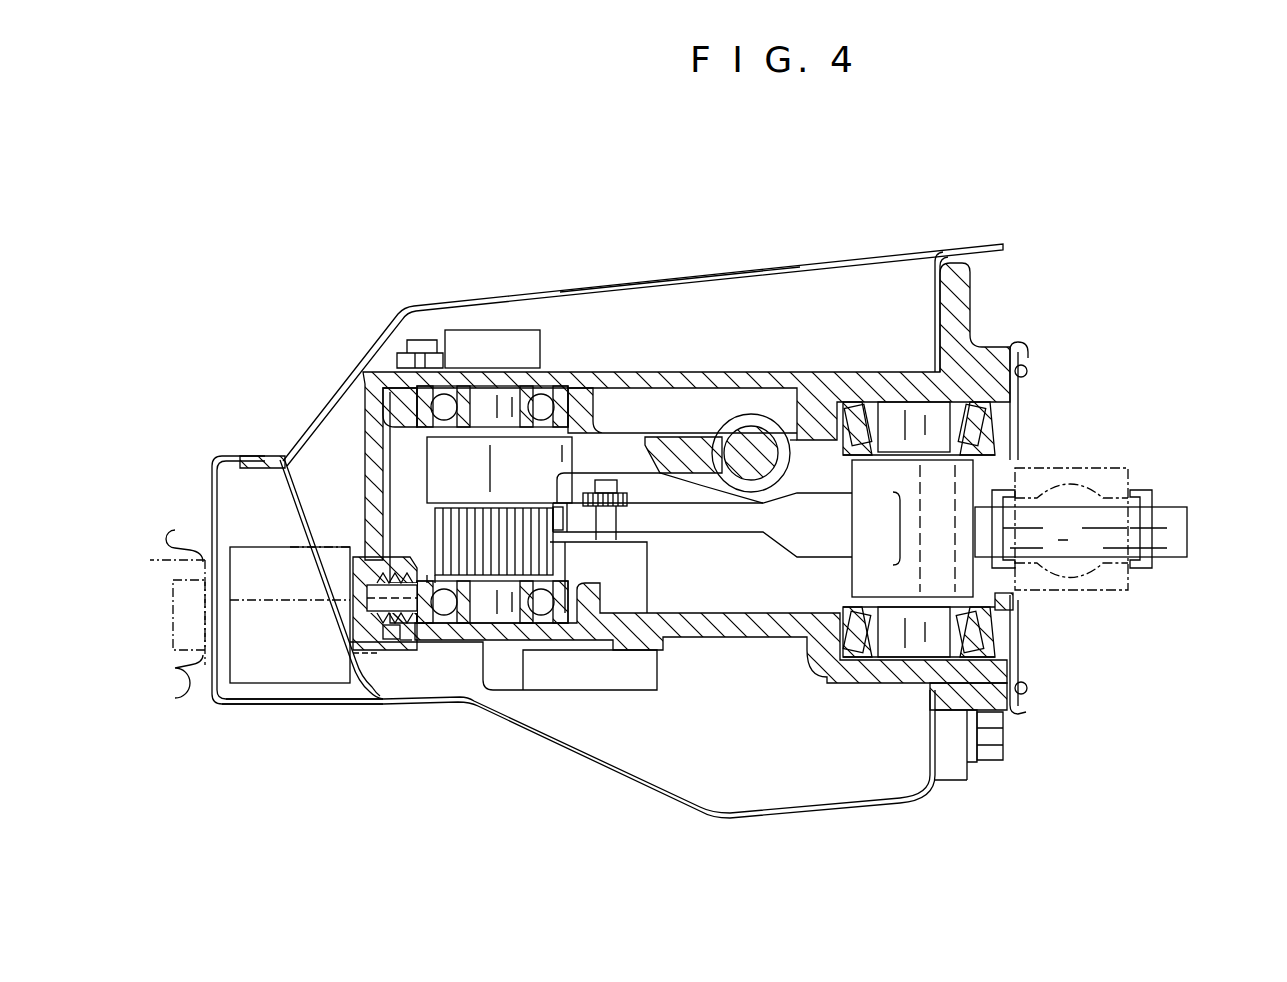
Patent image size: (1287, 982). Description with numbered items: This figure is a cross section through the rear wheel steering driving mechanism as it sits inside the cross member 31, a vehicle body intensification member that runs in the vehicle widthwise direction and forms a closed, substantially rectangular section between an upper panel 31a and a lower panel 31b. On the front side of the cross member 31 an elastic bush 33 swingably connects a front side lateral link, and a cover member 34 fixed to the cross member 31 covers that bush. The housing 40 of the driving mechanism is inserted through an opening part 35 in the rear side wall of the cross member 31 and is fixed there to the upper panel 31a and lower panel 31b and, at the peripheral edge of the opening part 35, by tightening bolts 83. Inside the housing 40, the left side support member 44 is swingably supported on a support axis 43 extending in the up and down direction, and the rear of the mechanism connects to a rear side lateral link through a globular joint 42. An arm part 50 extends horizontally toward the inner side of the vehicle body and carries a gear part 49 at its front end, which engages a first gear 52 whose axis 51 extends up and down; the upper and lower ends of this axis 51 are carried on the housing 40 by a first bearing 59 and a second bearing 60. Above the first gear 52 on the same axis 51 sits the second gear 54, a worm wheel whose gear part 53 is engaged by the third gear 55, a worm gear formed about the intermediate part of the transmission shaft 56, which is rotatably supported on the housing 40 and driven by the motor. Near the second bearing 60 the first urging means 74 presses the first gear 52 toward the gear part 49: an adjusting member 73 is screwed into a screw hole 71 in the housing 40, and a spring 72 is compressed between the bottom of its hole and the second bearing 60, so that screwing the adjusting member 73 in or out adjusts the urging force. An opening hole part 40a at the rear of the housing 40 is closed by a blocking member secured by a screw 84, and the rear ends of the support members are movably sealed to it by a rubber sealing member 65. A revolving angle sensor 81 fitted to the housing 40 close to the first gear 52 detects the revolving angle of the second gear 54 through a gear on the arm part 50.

The cross member 31 is at (515, 293).
The upper panel 31a is at (583, 286).
The lower panel 31b is at (523, 731).
The elastic bush 33 is at (250, 557).
The cover member 34 is at (256, 706).
The opening part 35 is at (1003, 717).
The housing 40 is at (698, 372).
The opening hole part 40a is at (1023, 457).
The globular joint 42 is at (1100, 492).
The support axis 43 is at (935, 417).
The left side support member 44 is at (1180, 502).
The gear part 49 is at (553, 505).
The arm part 50 is at (740, 527).
The axis 51 is at (498, 398).
The first gear 52 is at (435, 520).
The gear part 53 is at (737, 436).
The second gear 54 is at (627, 436).
The third gear 55 is at (787, 436).
The transmission shaft 56 is at (748, 435).
The first bearing 59 is at (585, 372).
The second bearing 60 is at (430, 560).
The sealing member 65 is at (1013, 599).
The screw hole 71 is at (380, 635).
The spring 72 is at (403, 633).
The adjusting member 73 is at (363, 560).
The first urging means 74 is at (405, 640).
The revolving angle sensor 81 is at (647, 573).
The tightening bolt 83 is at (1002, 757).
The screw 84 is at (1026, 362).